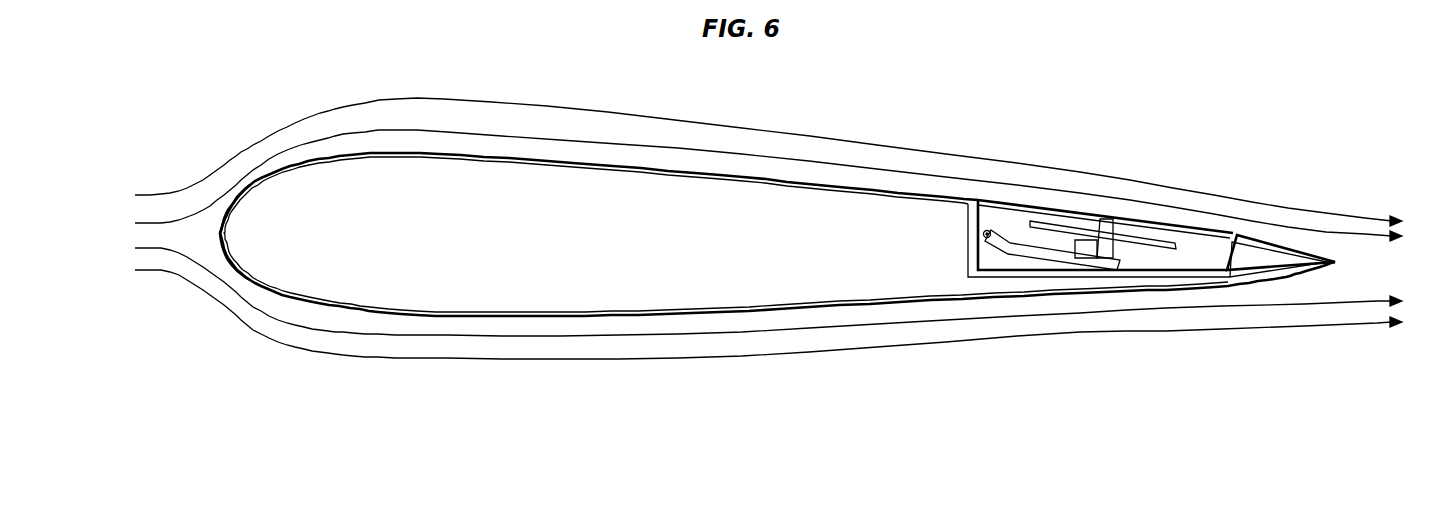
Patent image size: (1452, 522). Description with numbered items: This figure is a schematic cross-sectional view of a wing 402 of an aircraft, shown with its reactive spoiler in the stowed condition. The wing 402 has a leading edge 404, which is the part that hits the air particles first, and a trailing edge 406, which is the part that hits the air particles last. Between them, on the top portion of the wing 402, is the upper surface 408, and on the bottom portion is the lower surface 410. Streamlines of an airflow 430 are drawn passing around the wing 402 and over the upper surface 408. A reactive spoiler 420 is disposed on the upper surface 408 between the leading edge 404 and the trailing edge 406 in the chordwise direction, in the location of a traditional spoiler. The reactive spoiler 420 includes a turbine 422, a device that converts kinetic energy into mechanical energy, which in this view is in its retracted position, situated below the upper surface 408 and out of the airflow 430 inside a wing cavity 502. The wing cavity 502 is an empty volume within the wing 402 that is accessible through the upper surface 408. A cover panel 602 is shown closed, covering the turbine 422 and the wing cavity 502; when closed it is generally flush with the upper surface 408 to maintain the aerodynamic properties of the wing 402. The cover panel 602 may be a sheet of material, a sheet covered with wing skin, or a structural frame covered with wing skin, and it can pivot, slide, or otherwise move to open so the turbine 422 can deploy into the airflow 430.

The wing 402 is at (787, 237).
The leading edge 404 is at (220, 232).
The trailing edge 406 is at (1335, 262).
The upper surface 408 is at (667, 168).
The lower surface 410 is at (648, 317).
The reactive spoiler 420 is at (1055, 173).
The turbine 422 is at (1152, 237).
The airflow 430 is at (557, 106).
The wing cavity 502 is at (988, 259).
The cover panel 602 is at (1040, 207).